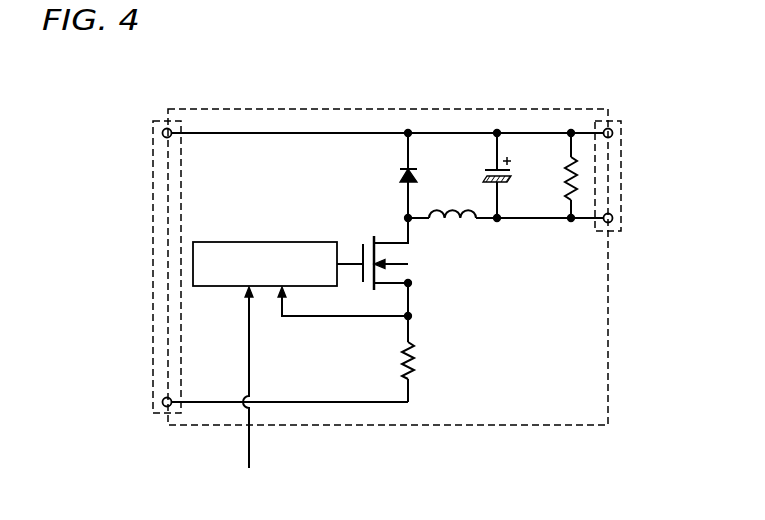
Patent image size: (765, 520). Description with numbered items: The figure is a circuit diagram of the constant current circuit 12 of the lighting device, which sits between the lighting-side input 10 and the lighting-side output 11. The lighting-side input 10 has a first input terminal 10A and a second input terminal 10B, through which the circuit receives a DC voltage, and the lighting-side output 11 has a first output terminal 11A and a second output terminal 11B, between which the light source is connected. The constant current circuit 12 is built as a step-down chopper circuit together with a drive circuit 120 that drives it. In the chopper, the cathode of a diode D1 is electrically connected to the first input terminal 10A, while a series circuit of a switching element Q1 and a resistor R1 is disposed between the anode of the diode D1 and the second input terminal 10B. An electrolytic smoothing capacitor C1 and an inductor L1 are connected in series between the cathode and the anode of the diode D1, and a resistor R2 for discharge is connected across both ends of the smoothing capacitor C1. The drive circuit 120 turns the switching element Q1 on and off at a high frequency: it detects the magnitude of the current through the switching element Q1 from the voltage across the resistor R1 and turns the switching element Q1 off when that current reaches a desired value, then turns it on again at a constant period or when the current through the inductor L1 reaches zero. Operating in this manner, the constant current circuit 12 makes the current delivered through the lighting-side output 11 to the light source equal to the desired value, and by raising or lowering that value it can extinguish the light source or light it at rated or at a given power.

The lighting-side input 10 is at (146, 207).
The first input terminal 10A is at (162, 133).
The second input terminal 10B is at (162, 402).
The lighting-side output 11 is at (628, 170).
The first output terminal 11A is at (612, 132).
The second output terminal 11B is at (612, 220).
The constant current circuit 12 is at (443, 108).
The drive circuit 120 is at (265, 246).
The diode D1 is at (391, 176).
The inductor L1 is at (475, 207).
The smoothing capacitor C1 is at (489, 176).
The resistor for discharge R2 is at (554, 176).
The resistor R1 is at (426, 358).
The switching element Q1 is at (393, 267).